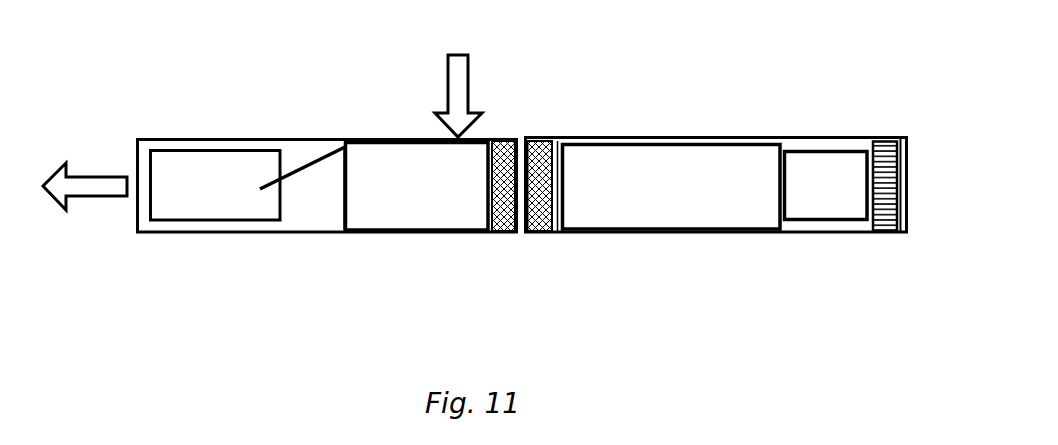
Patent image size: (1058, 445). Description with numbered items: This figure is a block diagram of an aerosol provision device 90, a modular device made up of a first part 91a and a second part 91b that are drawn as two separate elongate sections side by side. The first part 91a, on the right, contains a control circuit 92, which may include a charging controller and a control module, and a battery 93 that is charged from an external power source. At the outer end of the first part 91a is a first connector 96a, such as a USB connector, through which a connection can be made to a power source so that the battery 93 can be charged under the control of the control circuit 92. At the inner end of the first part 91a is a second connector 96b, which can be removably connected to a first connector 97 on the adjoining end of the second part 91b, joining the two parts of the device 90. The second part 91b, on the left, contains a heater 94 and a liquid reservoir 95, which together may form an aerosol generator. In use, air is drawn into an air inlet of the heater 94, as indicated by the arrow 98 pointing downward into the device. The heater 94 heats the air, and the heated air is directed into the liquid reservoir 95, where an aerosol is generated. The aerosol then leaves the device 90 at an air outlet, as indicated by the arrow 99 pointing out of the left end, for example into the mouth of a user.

The aerosol provision device 90 is at (522, 252).
The first part 91a is at (597, 276).
The second part 91b is at (252, 297).
The control circuit 92 is at (806, 220).
The battery 93 is at (595, 232).
The heater 94 is at (367, 233).
The liquid reservoir 95 is at (173, 218).
The first connector 96a is at (888, 138).
The second connector 96b is at (543, 138).
The first connector 97 is at (508, 137).
The arrow 98 is at (445, 73).
The arrow 99 is at (90, 175).